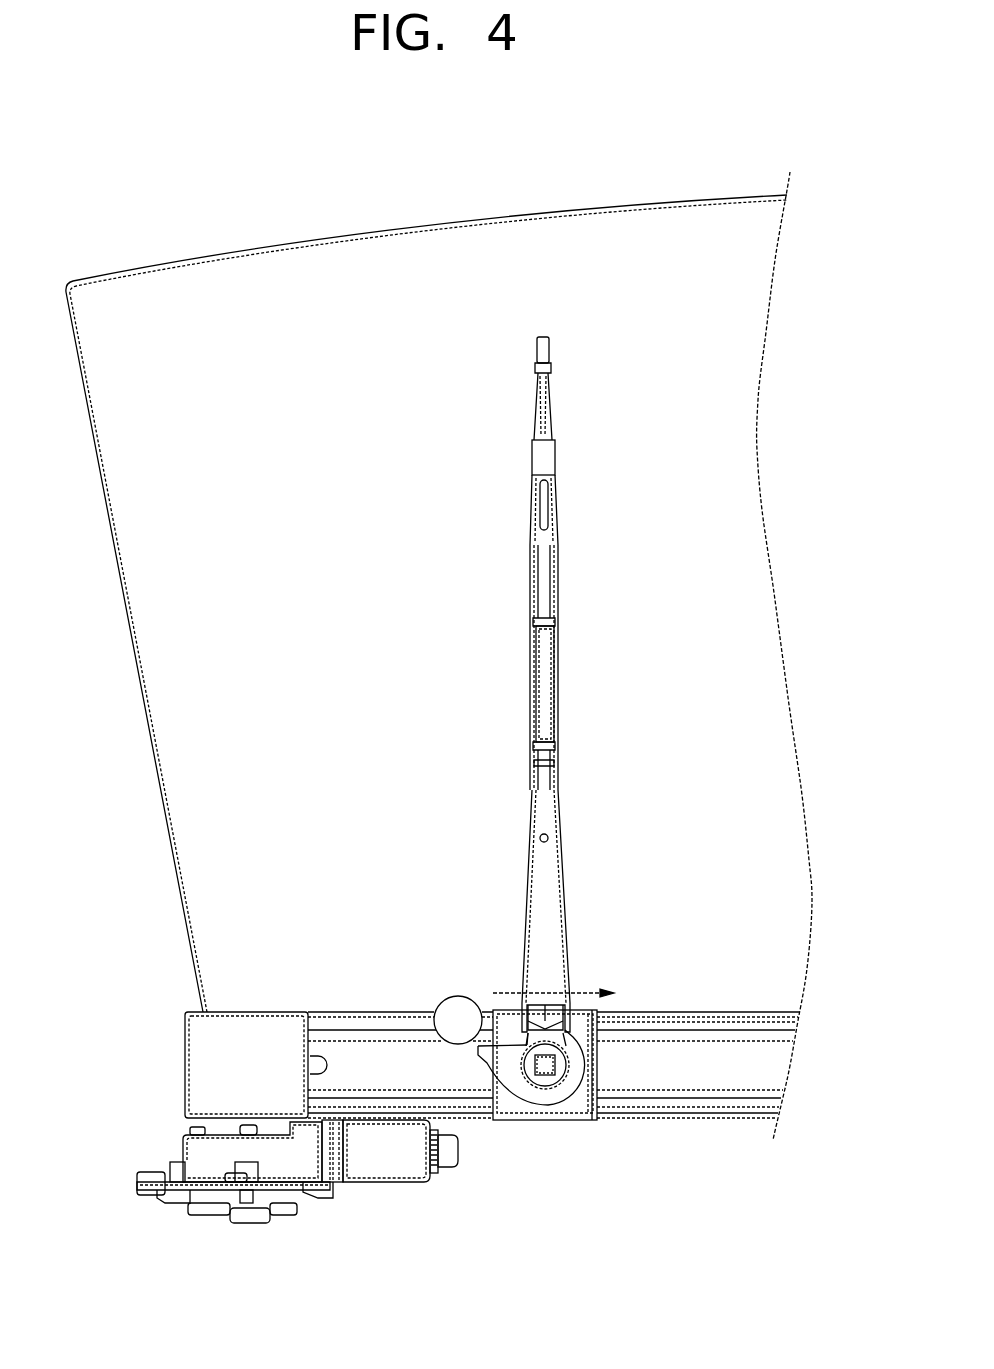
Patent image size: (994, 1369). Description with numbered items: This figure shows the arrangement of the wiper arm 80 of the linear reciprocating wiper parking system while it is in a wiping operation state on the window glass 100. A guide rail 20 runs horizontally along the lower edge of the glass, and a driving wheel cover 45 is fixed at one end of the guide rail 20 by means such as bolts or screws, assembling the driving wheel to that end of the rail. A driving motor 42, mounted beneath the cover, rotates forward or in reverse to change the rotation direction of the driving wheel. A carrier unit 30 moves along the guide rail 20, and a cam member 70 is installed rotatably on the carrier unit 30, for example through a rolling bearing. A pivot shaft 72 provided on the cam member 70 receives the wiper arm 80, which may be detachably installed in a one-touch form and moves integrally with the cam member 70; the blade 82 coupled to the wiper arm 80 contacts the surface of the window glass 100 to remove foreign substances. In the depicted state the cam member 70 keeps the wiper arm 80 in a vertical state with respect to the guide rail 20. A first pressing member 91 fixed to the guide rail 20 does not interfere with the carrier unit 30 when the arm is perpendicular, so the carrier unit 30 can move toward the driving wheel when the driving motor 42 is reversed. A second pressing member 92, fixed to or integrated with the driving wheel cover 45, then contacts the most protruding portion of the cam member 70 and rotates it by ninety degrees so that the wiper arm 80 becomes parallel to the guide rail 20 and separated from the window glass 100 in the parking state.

The window glass 100 is at (158, 700).
The guide rail 20 is at (685, 1120).
The driving wheel cover 45 is at (197, 1040).
The second pressing member 92 is at (322, 1062).
The first pressing member 91 is at (454, 1000).
The carrier unit 30 is at (580, 1105).
The cam member 70 is at (540, 1098).
The pivot shaft 72 is at (543, 1064).
The wiper arm 80 is at (544, 925).
The blade 82 is at (558, 652).
The driving motor 42 is at (387, 1172).